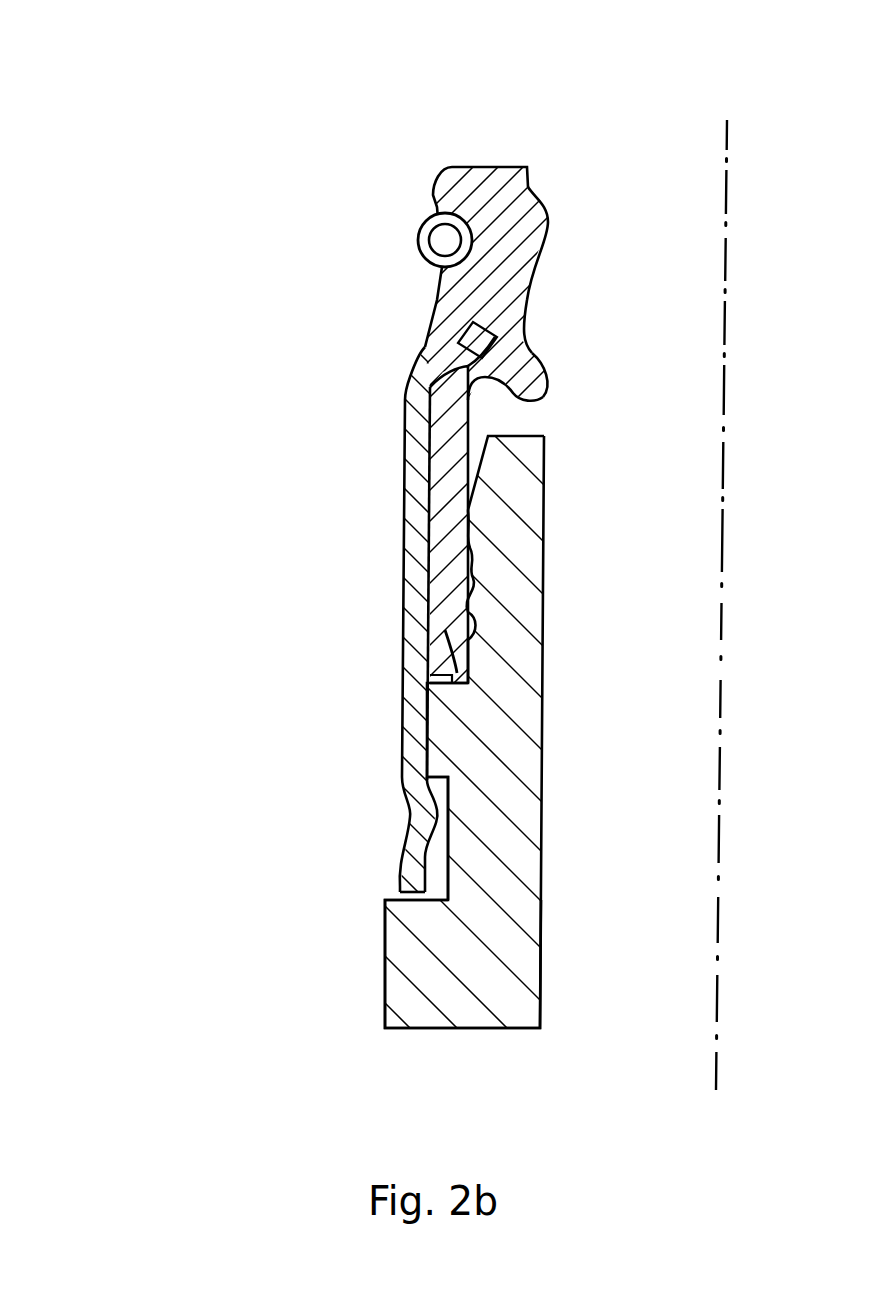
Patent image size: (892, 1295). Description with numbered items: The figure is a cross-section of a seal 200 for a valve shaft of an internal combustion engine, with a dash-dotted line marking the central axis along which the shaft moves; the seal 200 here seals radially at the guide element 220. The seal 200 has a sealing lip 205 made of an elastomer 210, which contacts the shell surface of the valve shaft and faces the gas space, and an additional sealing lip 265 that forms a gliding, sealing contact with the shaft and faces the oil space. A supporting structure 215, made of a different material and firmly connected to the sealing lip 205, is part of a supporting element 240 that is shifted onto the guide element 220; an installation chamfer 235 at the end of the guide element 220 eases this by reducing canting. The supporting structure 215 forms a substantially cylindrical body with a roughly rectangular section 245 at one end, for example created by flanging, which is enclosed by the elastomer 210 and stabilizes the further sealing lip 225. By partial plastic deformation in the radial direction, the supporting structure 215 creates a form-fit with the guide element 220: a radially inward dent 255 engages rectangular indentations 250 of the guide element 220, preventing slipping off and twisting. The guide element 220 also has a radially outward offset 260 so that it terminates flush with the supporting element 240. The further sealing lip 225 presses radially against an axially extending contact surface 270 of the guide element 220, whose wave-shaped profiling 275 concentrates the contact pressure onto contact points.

The seal 200 is at (147, 112).
The sealing lip 205 is at (548, 382).
The elastomer 210 is at (475, 293).
The supporting structure 215 is at (405, 405).
The guide element 220 is at (385, 973).
The further sealing lip 225 is at (468, 678).
The installation chamfer 235 is at (487, 473).
The supporting element 240 is at (444, 503).
The section 245 is at (445, 357).
The indentations 250 is at (449, 815).
The dent 255 is at (410, 822).
The offset 260 is at (405, 893).
The additional sealing lip 265 is at (548, 217).
The contact surface 270 is at (470, 620).
The wave-shaped profiling 275 is at (470, 560).